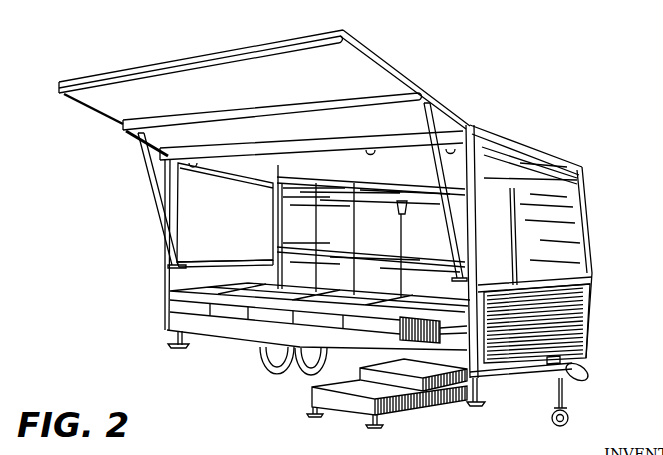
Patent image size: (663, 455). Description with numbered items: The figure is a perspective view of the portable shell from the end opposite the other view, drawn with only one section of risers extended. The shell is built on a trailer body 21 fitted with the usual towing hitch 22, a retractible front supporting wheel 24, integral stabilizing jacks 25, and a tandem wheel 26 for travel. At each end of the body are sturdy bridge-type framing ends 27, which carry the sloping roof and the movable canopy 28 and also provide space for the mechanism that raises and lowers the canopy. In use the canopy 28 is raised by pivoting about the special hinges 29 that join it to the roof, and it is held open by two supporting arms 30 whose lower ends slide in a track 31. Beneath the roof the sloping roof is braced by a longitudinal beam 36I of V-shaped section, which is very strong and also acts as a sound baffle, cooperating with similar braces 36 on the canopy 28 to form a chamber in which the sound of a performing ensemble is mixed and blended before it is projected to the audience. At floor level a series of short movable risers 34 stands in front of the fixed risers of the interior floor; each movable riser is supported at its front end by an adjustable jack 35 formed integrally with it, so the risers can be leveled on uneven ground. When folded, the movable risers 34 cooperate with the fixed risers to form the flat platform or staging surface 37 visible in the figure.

The trailer body 21 is at (271, 207).
The towing hitch 22 is at (589, 364).
The retractible front supporting wheel 24 is at (567, 391).
The stabilizing jacks 25 is at (172, 336).
The tandem wheel 26 is at (276, 365).
The bridge-type framing ends 27 is at (597, 238).
The movable canopy 28 is at (379, 56).
The special hinges 29 is at (195, 159).
The supporting arms 30 is at (152, 190).
The track 31 is at (211, 260).
The movable risers 34 is at (268, 313).
The adjustable jacks 35 is at (366, 426).
The braces 36 is at (222, 115).
The longitudinal beam 36I is at (511, 160).
The flat platform or staging surface 37 is at (302, 290).